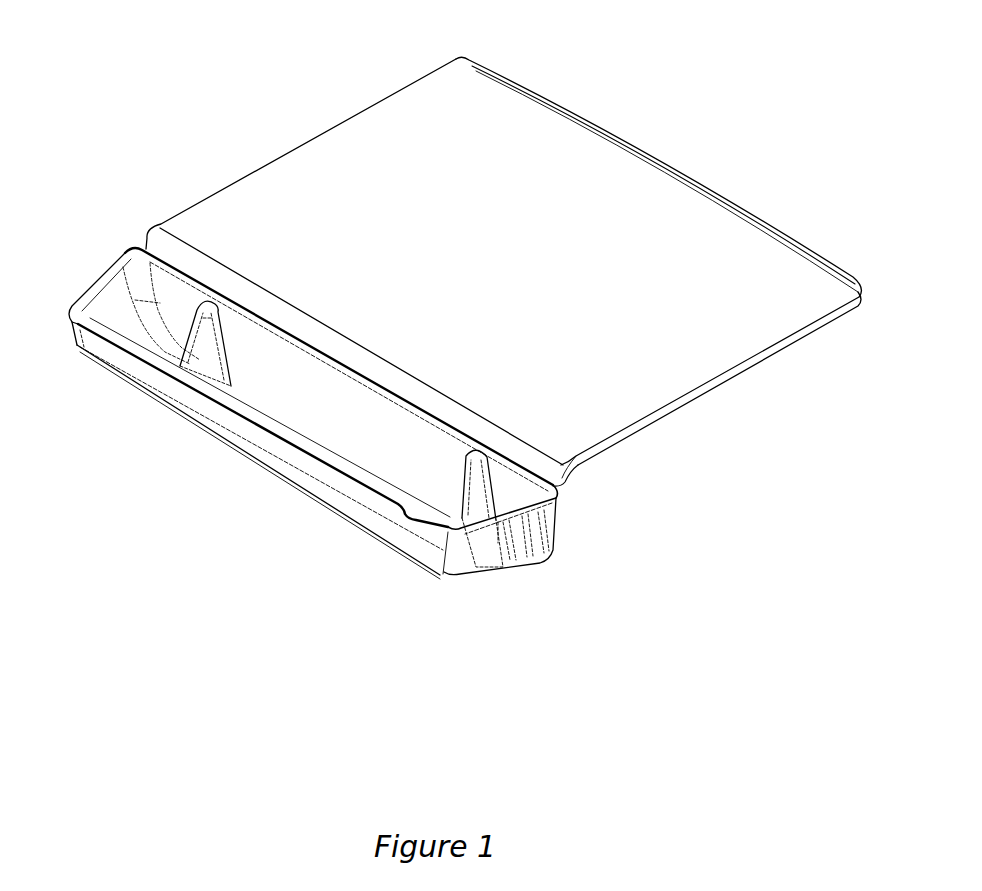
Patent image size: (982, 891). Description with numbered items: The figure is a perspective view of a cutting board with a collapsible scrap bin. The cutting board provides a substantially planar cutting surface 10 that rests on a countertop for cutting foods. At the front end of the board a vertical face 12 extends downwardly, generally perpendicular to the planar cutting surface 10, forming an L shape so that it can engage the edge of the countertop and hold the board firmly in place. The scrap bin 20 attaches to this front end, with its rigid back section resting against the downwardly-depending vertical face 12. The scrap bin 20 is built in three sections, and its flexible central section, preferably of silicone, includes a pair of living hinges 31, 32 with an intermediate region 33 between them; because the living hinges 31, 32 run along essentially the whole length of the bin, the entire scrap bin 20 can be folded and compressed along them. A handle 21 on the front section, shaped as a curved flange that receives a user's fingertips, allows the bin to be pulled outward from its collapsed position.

The planar cutting surface 10 is at (660, 217).
The vertical face 12 is at (563, 500).
The scrap bin 20 is at (110, 260).
The handle 21 is at (215, 418).
The living hinge 31 is at (483, 570).
The living hinge 32 is at (510, 567).
The intermediate region 33 is at (498, 543).